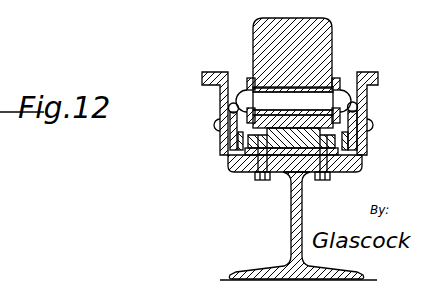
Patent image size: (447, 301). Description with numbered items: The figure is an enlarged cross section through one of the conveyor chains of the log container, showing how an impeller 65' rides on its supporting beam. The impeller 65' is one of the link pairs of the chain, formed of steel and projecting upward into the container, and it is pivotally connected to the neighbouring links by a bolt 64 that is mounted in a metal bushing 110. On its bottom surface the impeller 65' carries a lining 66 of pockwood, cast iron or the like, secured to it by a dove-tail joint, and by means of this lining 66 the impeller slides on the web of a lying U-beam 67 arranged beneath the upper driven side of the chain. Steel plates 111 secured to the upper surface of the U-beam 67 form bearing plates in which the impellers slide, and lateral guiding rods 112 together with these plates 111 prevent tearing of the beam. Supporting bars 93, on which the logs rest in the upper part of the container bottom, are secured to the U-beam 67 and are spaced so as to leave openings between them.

The impeller 65' is at (313, 50).
The bolt 64 is at (310, 97).
The supporting bar 93 is at (370, 73).
The metal bushing 110 is at (267, 83).
The lateral guiding rod 112 is at (236, 143).
The U-beam 67 is at (358, 159).
The lining 66 is at (282, 180).
The plate 111 is at (307, 176).